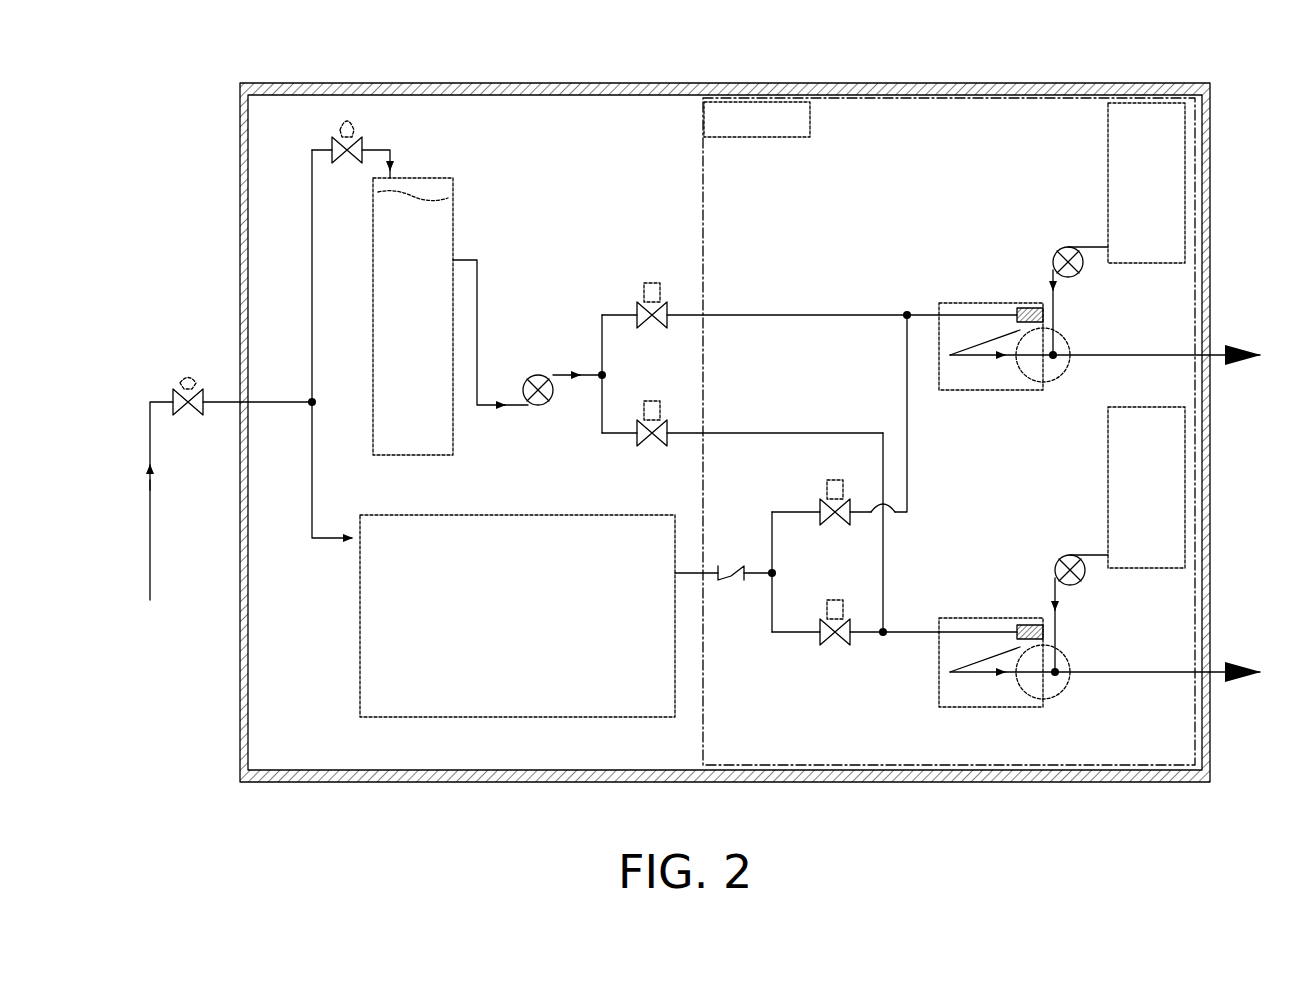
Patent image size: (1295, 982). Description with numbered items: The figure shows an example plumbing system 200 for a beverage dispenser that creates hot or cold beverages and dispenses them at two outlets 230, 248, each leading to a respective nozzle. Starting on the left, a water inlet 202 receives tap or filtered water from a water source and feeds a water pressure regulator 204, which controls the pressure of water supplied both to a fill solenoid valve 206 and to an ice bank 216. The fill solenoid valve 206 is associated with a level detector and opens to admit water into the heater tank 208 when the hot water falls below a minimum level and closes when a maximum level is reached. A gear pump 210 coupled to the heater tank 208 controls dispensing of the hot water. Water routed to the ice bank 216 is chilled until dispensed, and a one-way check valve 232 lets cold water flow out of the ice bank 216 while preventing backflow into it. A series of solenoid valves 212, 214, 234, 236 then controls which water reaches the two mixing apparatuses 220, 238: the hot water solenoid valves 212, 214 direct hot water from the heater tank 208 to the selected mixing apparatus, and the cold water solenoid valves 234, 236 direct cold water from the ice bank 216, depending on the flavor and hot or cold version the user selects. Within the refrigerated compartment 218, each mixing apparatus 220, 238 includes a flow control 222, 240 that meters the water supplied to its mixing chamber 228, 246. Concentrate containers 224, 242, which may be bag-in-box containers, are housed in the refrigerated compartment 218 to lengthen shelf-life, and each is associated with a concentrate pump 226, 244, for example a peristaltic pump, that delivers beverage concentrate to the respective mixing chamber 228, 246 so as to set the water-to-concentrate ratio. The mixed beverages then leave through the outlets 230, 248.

The plumbing system 200 is at (752, 38).
The water inlet 202 is at (150, 532).
The water pressure regulator 204 is at (185, 382).
The fill solenoid valve 206 is at (363, 138).
The heater tank 208 is at (455, 238).
The gear pump 210 is at (536, 406).
The hot water solenoid valve 212 is at (657, 284).
The hot water solenoid valve 214 is at (657, 402).
The ice bank 216 is at (510, 514).
The refrigerated compartment 218 is at (795, 93).
The mixing apparatus 220 is at (940, 304).
The flow control 222 is at (1009, 282).
The concentrate container 224 is at (1106, 184).
The concentrate pump 226 is at (1078, 273).
The mixing chamber 228 is at (1066, 376).
The outlet 230 is at (1233, 352).
The one-way check valve 232 is at (745, 553).
The cold water solenoid valve 234 is at (832, 481).
The cold water solenoid valve 236 is at (832, 601).
The mixing apparatus 238 is at (938, 663).
The flow control 240 is at (1012, 592).
The concentrate container 242 is at (1106, 470).
The concentrate pump 244 is at (1081, 580).
The mixing chamber 246 is at (1063, 694).
The outlet 248 is at (1237, 667).